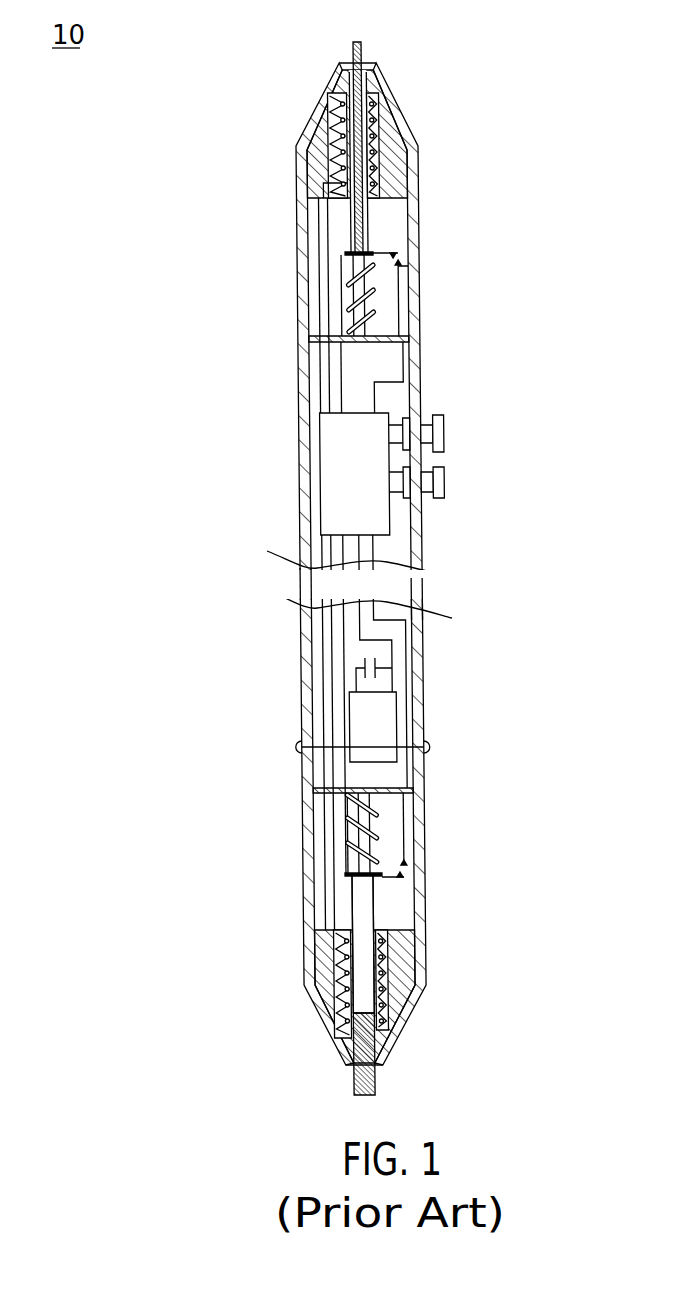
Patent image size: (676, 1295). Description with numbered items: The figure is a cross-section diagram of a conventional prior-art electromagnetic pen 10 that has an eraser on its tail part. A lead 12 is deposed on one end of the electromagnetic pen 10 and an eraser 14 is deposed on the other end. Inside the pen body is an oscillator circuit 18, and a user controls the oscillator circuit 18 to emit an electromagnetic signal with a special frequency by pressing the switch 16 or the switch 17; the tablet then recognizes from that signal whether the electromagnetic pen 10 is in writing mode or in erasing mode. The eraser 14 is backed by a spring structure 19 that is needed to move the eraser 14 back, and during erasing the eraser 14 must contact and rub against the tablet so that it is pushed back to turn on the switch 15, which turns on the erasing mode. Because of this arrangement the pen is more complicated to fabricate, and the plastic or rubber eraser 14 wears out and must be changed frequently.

The electromagnetic pen 10 is at (361, 564).
The lead 12 is at (363, 48).
The eraser 14 is at (376, 1076).
The switch 15 is at (403, 867).
The switch 16 is at (441, 478).
The switch 17 is at (441, 416).
The oscillator circuit 18 is at (337, 477).
The spring structure 19 is at (378, 839).